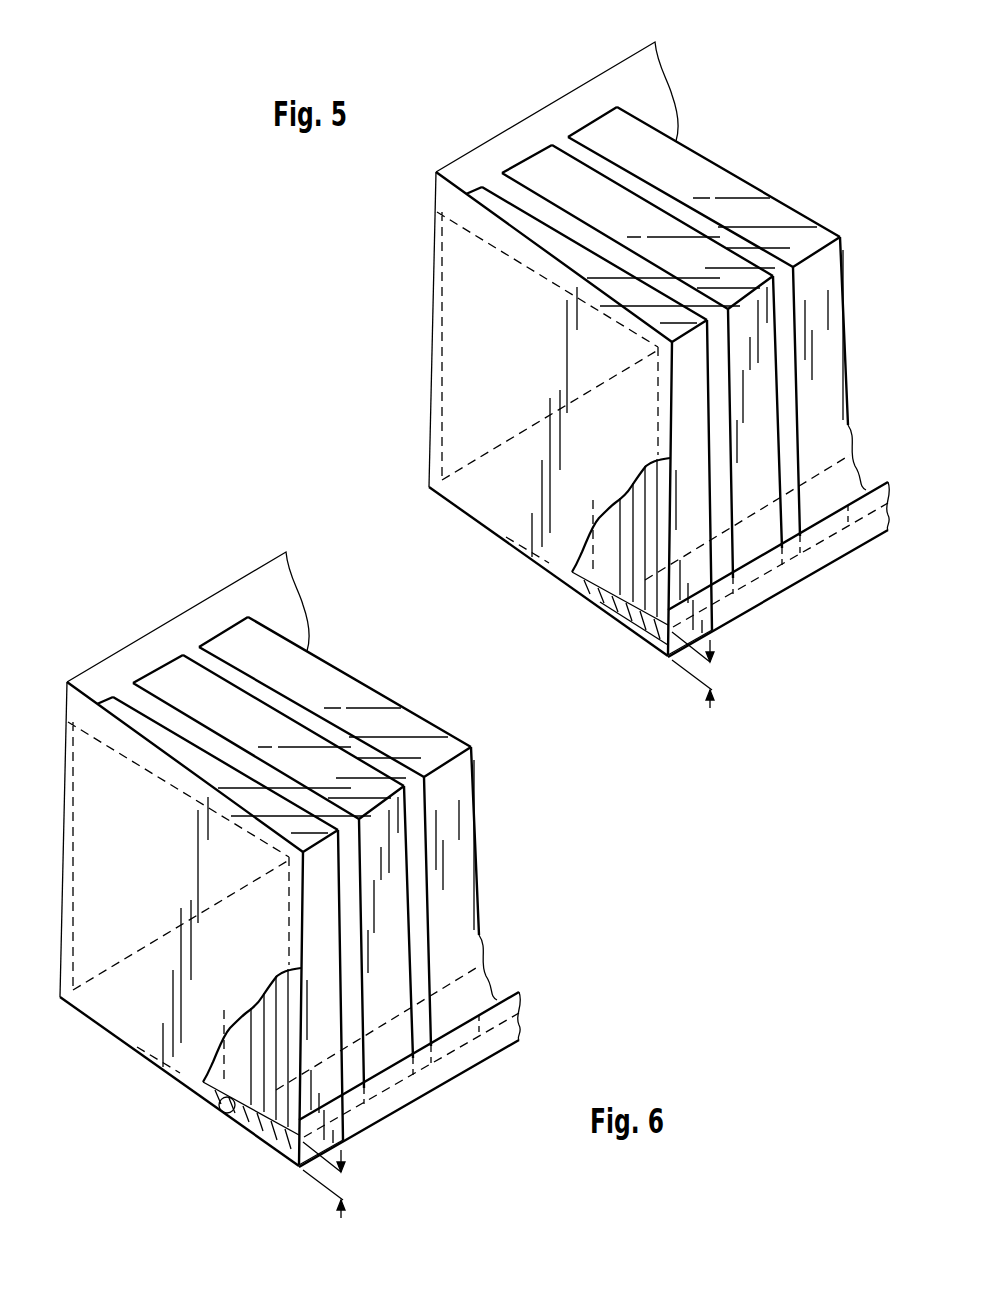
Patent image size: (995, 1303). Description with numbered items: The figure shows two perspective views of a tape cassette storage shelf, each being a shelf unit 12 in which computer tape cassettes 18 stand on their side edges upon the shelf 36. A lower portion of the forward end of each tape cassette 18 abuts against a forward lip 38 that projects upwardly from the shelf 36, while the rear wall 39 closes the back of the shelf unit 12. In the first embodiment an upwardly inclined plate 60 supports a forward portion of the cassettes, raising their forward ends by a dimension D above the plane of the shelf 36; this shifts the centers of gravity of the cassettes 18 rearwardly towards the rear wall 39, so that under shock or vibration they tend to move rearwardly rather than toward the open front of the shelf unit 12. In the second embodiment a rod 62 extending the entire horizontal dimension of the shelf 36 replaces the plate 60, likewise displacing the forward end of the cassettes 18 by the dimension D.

In FIG. 5, the shelf unit 12 is at (496, 539).
In FIG. 6, the shelf unit 12 is at (172, 901).
In FIG. 5, the tape cassette 18 is at (700, 487).
In FIG. 6, the tape cassette 18 is at (273, 891).
In FIG. 5, the shelf 36 is at (567, 590).
In FIG. 6, the shelf 36 is at (180, 1069).
In FIG. 5, the forward lip 38 is at (845, 537).
In FIG. 6, the forward lip 38 is at (398, 1066).
In FIG. 5, the rear wall 39 is at (566, 112).
In FIG. 6, the rear wall 39 is at (278, 776).
In FIG. 5, the inclined plate 60 is at (602, 608).
In FIG. 6, the rod 62 is at (188, 1127).
In FIG. 5, the dimension D is at (708, 673).
In FIG. 6, the dimension D is at (349, 1180).